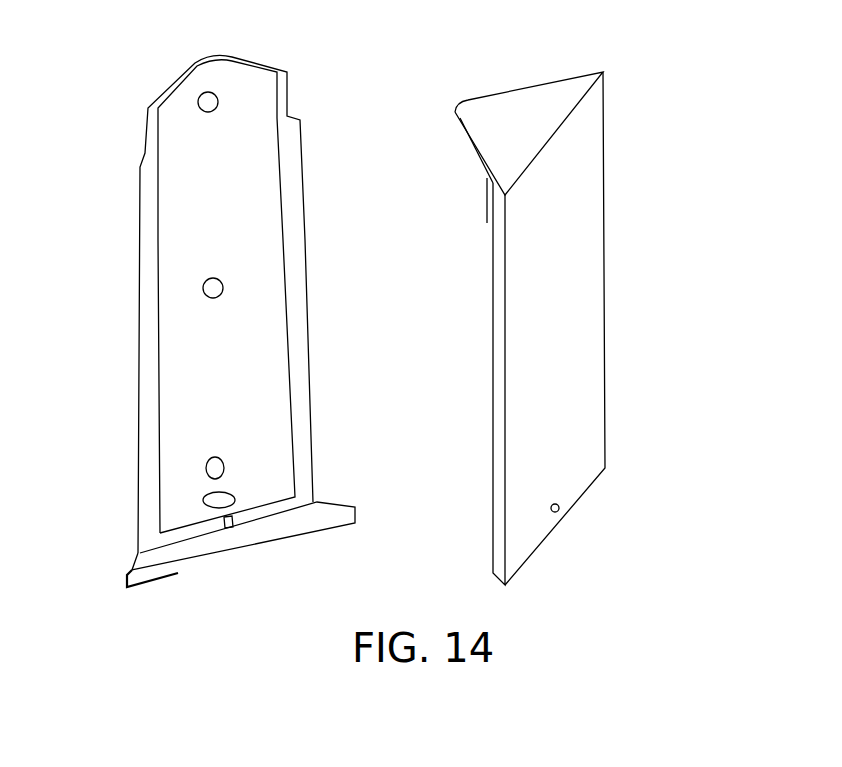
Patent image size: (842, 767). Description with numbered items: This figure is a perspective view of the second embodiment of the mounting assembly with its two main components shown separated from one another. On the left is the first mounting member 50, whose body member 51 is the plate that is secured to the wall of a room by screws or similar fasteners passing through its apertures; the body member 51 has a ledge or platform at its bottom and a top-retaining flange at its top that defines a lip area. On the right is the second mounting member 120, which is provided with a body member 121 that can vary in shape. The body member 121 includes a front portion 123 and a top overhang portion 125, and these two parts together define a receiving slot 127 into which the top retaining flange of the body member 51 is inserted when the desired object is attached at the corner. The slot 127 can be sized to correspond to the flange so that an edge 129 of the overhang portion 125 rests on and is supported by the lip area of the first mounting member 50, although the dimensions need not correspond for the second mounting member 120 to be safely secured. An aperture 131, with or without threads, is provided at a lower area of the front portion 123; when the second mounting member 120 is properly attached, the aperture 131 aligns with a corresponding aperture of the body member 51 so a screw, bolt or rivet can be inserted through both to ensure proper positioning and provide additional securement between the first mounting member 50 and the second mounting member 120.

The first mounting member 50 is at (101, 391).
The body member 51 is at (240, 373).
The second mounting member 120 is at (632, 291).
The body member 121 is at (607, 197).
The front portion 123 is at (578, 363).
The top overhang portion 125 is at (455, 122).
The receiving slot 127 is at (485, 212).
The edge 129 is at (483, 223).
The aperture 131 is at (560, 508).